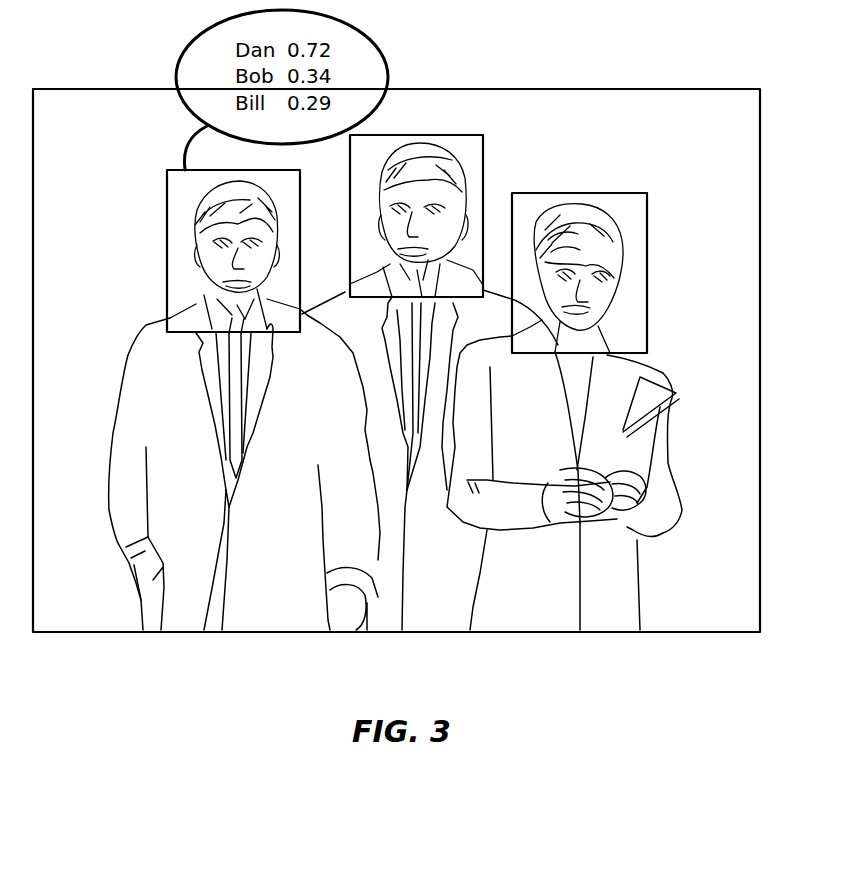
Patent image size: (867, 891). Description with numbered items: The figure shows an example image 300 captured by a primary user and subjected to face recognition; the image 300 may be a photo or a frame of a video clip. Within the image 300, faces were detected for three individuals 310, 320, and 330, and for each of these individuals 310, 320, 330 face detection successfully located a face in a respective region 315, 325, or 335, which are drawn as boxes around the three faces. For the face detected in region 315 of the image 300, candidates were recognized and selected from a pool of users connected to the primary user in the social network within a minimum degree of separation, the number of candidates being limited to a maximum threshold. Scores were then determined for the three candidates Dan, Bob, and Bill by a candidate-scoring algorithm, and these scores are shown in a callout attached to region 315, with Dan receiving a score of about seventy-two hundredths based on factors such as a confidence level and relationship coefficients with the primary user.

The image 300 is at (99, 84).
The individual 310 is at (112, 418).
The region 315 is at (162, 200).
The individual 320 is at (342, 282).
The region 325 is at (488, 156).
The individual 330 is at (672, 456).
The region 335 is at (651, 243).